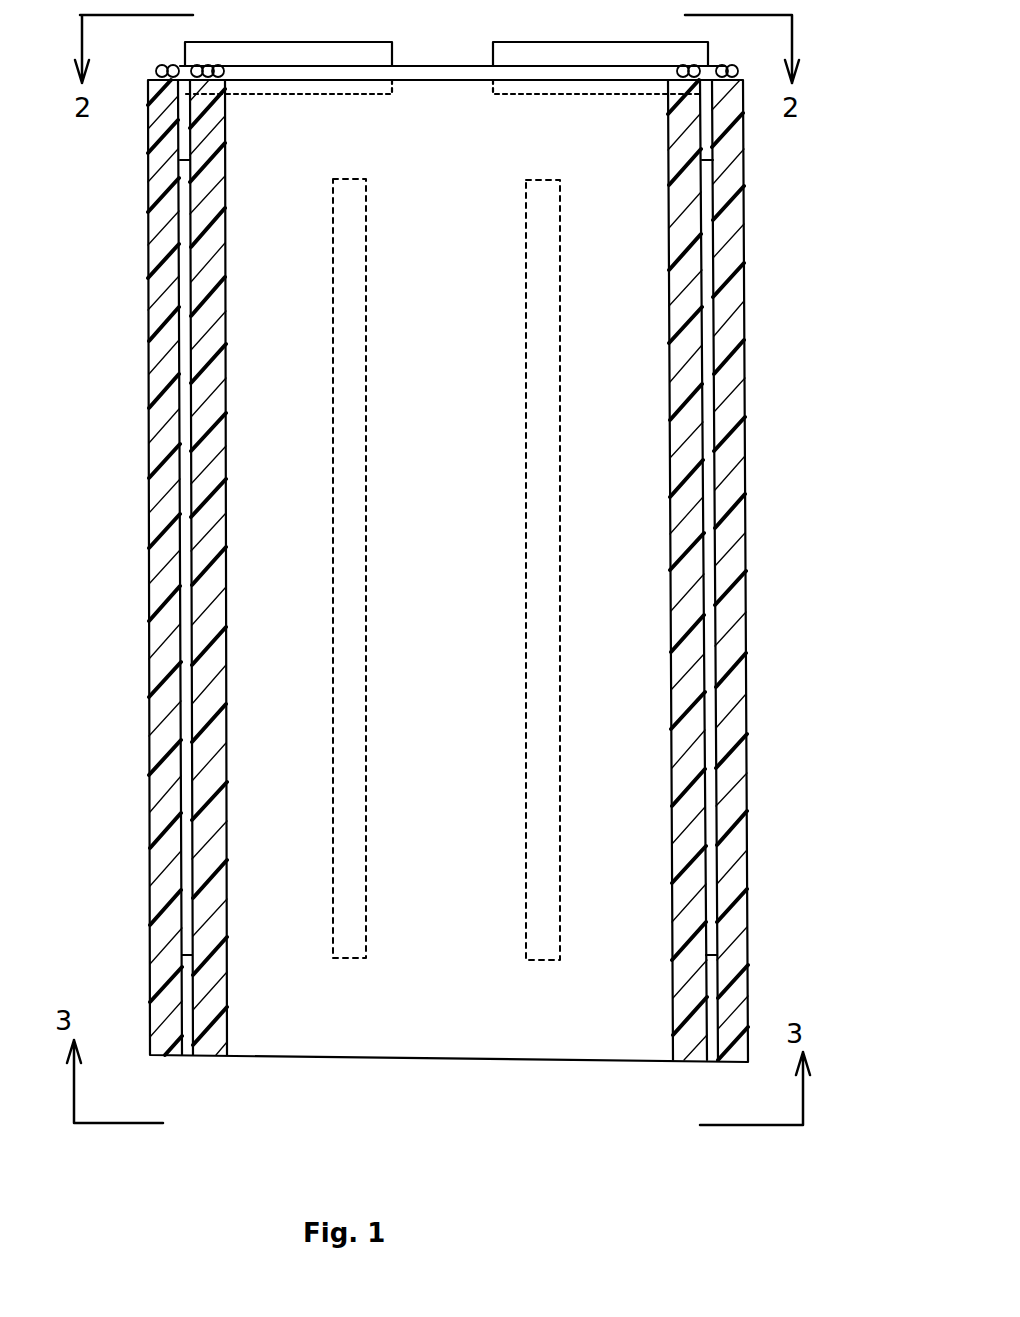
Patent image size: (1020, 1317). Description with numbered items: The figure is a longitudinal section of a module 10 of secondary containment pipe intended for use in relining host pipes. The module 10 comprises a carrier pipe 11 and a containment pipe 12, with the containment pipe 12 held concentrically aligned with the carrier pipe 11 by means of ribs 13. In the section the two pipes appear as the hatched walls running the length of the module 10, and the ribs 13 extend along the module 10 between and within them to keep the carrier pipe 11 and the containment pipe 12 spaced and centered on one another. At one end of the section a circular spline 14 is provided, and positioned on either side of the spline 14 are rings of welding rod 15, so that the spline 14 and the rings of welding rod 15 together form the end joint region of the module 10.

The module 10 is at (758, 501).
The carrier pipe 11 is at (668, 318).
The containment pipe 12 is at (745, 316).
The ribs 13 is at (195, 230).
The circular spline 14 is at (358, 42).
The rings of welding rod 15 is at (160, 65).